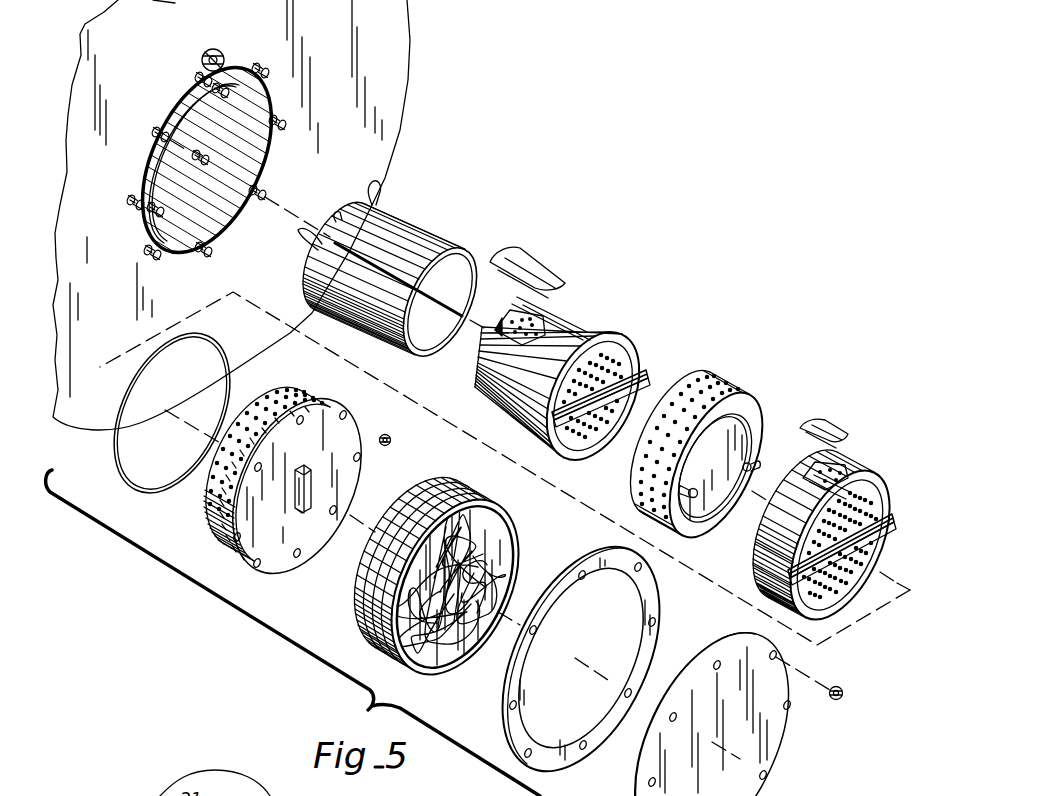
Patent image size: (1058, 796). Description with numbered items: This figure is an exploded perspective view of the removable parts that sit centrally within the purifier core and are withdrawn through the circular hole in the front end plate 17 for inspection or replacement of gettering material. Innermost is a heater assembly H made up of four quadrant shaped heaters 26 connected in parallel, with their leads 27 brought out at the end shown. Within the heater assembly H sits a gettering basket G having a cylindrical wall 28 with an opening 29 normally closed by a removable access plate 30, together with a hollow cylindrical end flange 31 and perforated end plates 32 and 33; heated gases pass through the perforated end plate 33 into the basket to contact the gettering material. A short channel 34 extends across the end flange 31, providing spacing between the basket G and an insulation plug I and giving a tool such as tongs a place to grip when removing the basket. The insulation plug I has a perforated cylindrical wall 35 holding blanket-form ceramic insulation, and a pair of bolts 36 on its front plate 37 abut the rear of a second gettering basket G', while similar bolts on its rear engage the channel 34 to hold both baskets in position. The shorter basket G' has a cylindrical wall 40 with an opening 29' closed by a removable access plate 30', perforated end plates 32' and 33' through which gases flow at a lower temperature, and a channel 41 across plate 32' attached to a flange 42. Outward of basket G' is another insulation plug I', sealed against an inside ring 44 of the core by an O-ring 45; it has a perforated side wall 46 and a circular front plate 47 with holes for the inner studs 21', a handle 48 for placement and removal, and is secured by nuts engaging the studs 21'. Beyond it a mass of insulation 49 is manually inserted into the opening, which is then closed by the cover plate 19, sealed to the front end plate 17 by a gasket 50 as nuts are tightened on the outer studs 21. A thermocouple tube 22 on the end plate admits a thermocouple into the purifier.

The front end plate 17 is at (392, 50).
The cover plate 19 is at (773, 742).
The studs 21 is at (191, 127).
The inner studs 21' is at (220, 182).
The thermocouple tube 22 is at (208, 50).
The quadrant shaped heaters 26 is at (437, 235).
The leads 27 is at (380, 185).
The cylindrical wall 28 is at (522, 398).
The opening 29 is at (558, 311).
The removable access plate 30 is at (527, 259).
The hollow cylindrical end flange 31 is at (620, 336).
The perforated end plate 32 is at (616, 372).
The perforated end plate 33 is at (513, 313).
The short channel 34 is at (645, 370).
The perforated cylindrical wall 35 is at (700, 388).
The bolts 36 is at (700, 495).
The front plate 37 is at (740, 417).
The cylindrical wall 40 is at (762, 553).
The channel 41 is at (892, 530).
The flange 42 is at (893, 503).
The inside ring 44 is at (236, 228).
The O-ring 45 is at (222, 357).
The perforated side wall 46 is at (284, 393).
The circular front plate 47 is at (343, 476).
The handle 48 is at (311, 512).
The mass of insulation 49 is at (360, 598).
The gasket 50 is at (647, 610).
The opening 29' is at (808, 470).
The removable access plate 30' is at (831, 407).
The perforated end plate 32' is at (914, 494).
The perforated end plate 33' is at (844, 462).
The gettering basket G is at (593, 382).
The second gettering basket G' is at (849, 540).
The heater assembly H is at (410, 216).
The insulation plug I is at (746, 375).
The insulation plug I' is at (192, 544).